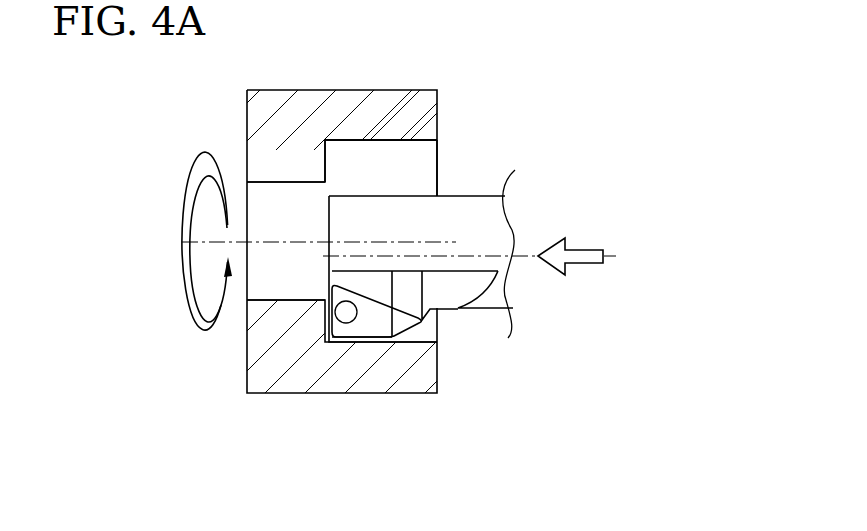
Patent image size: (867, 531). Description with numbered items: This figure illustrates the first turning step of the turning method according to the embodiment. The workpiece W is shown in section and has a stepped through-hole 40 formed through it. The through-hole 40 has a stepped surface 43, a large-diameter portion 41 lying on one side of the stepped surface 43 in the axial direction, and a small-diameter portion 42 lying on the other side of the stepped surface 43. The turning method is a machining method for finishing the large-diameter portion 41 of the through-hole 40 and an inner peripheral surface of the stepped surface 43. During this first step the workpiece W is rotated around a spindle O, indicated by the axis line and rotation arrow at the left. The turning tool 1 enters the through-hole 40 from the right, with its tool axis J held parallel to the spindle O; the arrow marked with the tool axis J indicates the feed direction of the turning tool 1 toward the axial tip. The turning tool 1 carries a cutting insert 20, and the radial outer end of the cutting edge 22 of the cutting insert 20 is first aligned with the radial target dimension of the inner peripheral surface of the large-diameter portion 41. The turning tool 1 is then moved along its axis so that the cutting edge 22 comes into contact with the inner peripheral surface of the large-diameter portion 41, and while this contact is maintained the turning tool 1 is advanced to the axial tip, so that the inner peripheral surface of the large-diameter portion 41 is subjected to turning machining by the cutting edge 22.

The turning tool 1 is at (492, 183).
The cutting insert 20 is at (367, 310).
The cutting edge 22 is at (330, 340).
The stepped through-hole 40 is at (437, 156).
The large-diameter portion 41 is at (367, 141).
The small-diameter portion 42 is at (263, 183).
The stepped surface 43 is at (330, 146).
The workpiece W is at (445, 88).
The spindle O is at (208, 242).
The tool axis J is at (532, 253).